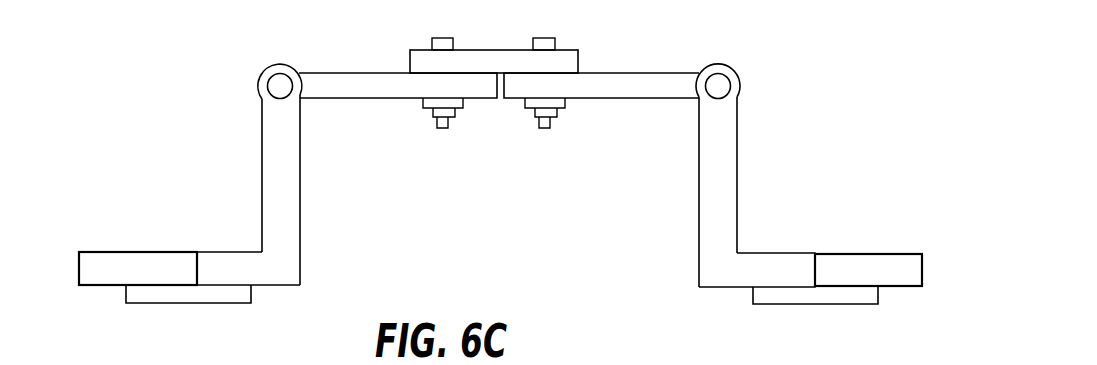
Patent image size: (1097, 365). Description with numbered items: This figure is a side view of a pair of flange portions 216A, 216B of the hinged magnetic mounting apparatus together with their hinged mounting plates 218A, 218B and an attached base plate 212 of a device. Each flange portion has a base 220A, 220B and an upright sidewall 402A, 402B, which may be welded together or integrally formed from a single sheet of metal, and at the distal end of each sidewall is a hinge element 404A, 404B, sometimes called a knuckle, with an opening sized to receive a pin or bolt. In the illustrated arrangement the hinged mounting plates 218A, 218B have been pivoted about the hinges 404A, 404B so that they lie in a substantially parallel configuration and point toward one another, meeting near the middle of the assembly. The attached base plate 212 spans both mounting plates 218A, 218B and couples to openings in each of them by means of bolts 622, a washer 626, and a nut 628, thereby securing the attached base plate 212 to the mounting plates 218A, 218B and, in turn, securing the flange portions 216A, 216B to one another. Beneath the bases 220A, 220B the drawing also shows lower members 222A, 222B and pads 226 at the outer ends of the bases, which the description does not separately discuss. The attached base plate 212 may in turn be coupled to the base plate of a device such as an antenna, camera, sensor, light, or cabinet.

The attached base plate 212 is at (477, 50).
The first flange portion 216A is at (338, 246).
The second flange portion 216B is at (782, 145).
The first hinged mounting plate 218A is at (347, 99).
The second hinged mounting plate 218B is at (646, 99).
The base of first flange portion 220A is at (240, 268).
The base of second flange portion 220B is at (771, 253).
The first base pad 222A is at (207, 298).
The second base pad 222B is at (806, 304).
The pad 226 is at (170, 260).
The sidewall of first flange portion 402A is at (262, 180).
The sidewall of second flange portion 402B is at (699, 213).
The first hinge element 404A is at (277, 64).
The second hinge element 404B is at (742, 83).
The bolt 622 is at (542, 38).
The washer 626 is at (530, 107).
The nut 628 is at (538, 122).